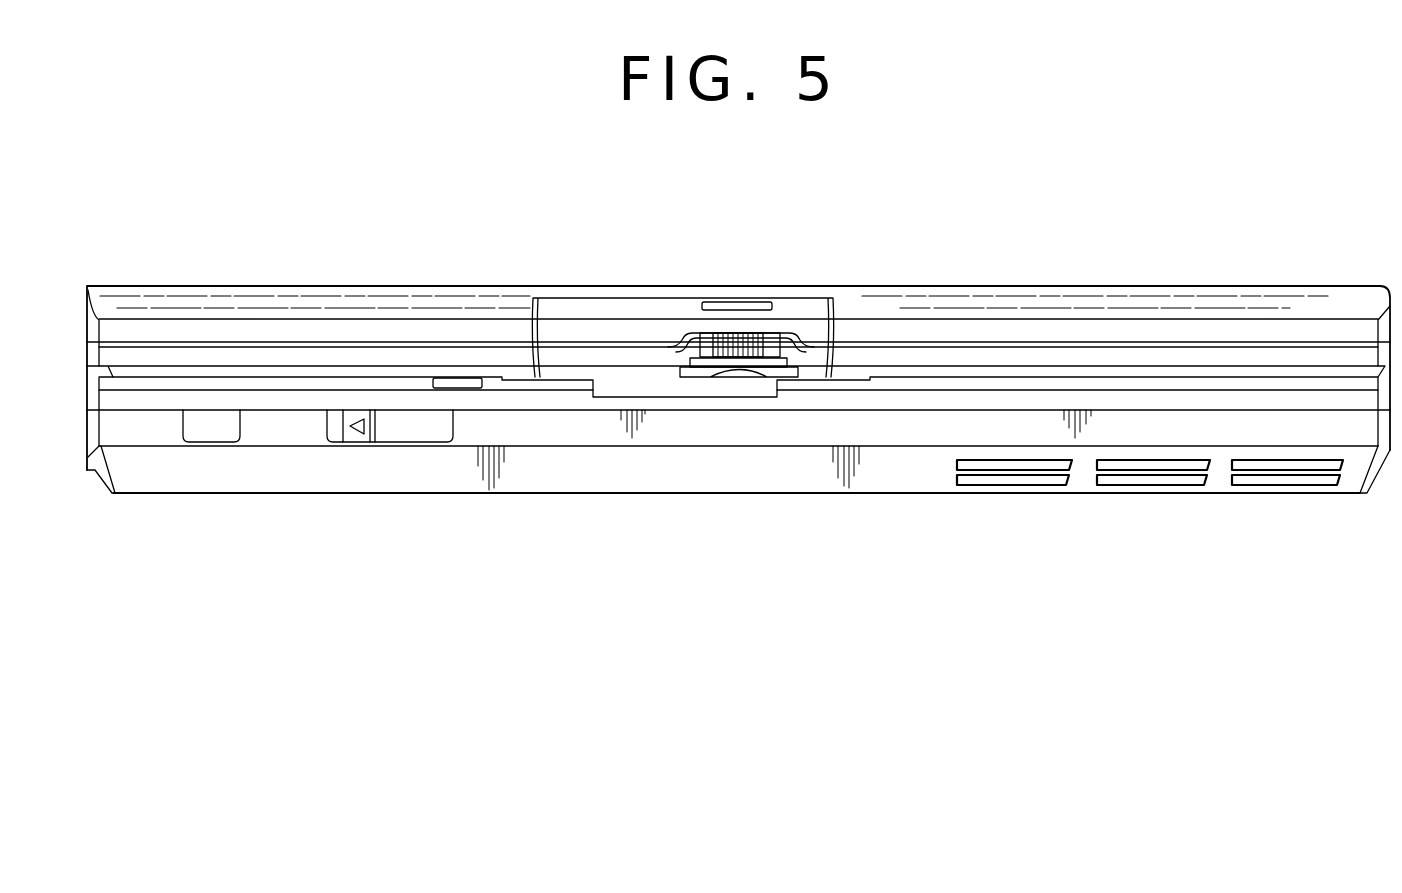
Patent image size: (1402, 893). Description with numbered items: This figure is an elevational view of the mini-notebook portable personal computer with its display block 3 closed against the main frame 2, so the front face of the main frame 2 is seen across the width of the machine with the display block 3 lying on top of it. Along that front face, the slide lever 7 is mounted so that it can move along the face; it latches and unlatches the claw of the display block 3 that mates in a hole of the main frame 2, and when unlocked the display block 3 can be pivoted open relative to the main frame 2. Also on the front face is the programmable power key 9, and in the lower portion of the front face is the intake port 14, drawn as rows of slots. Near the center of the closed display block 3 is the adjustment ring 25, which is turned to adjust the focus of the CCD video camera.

The main frame 2 is at (738, 500).
The display block 3 is at (738, 345).
The slide lever 7 is at (405, 434).
The programmable power key 9 is at (210, 434).
The intake port 14 is at (1153, 478).
The adjustment ring 25 is at (743, 333).